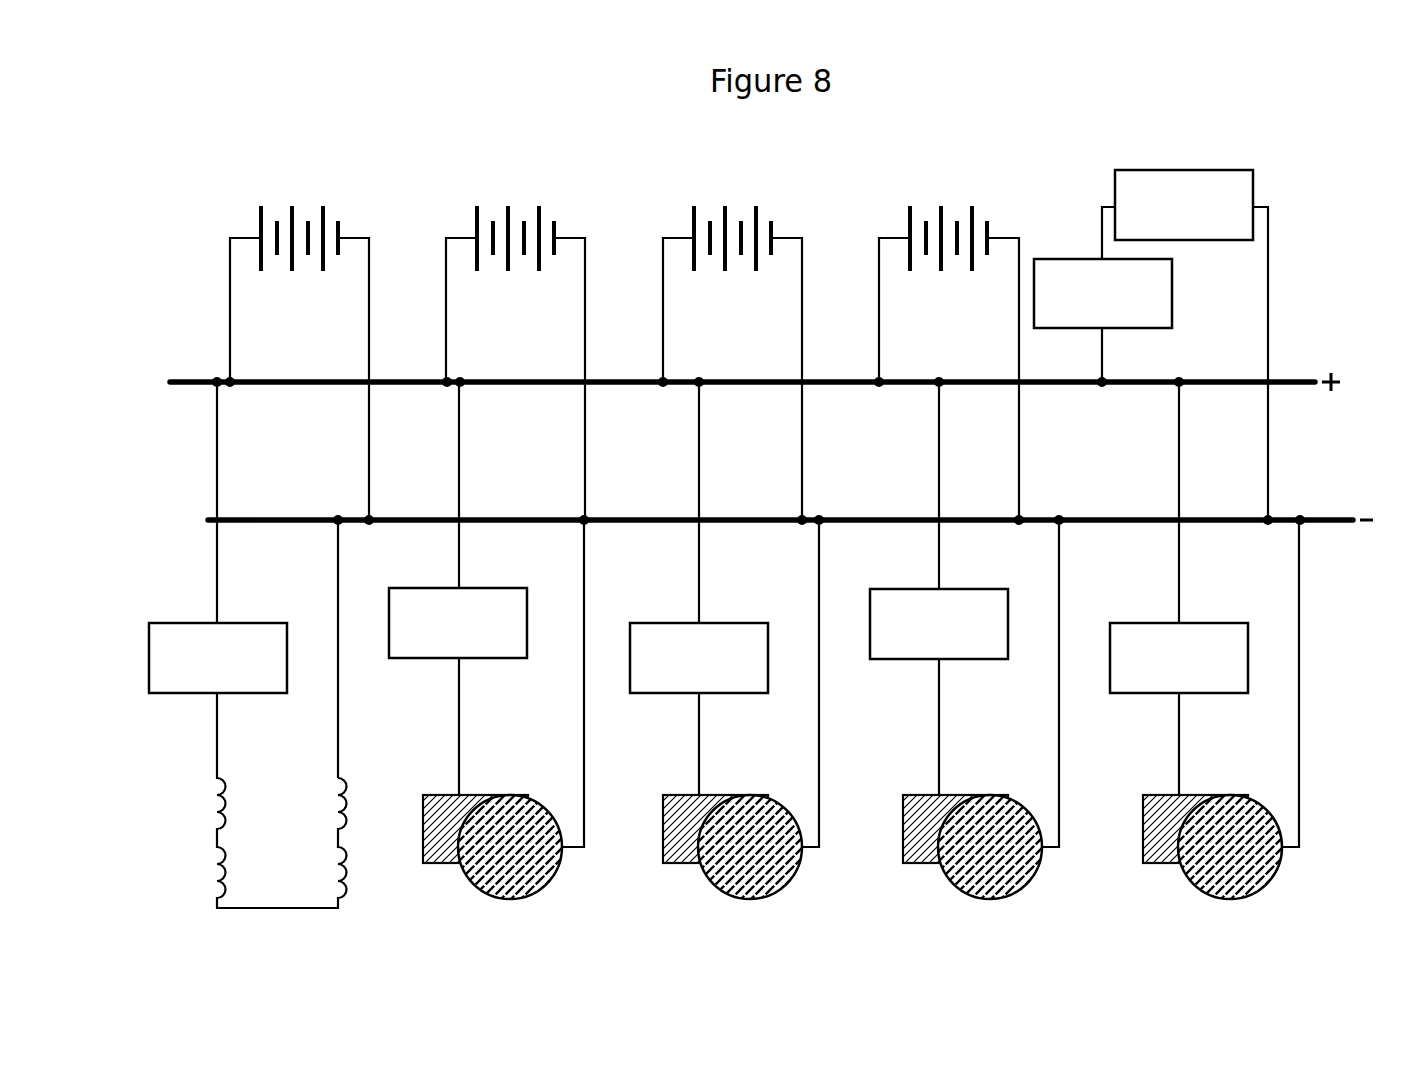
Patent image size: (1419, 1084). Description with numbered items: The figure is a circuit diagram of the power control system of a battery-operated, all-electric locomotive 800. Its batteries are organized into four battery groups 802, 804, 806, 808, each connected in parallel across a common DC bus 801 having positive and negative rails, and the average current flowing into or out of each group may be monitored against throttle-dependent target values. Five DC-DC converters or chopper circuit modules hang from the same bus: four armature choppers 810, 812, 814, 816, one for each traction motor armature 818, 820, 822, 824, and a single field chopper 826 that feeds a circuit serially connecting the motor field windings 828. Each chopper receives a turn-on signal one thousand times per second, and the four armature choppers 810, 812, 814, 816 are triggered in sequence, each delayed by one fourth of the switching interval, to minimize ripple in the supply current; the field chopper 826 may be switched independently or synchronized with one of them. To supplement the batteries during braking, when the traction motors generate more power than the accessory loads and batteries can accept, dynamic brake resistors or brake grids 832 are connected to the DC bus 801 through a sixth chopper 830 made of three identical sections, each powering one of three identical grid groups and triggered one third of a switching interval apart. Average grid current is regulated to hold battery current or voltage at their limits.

The locomotive 800 is at (214, 146).
The DC bus 801 is at (1310, 477).
The battery group 802 is at (348, 196).
The battery group 804 is at (563, 196).
The battery group 806 is at (780, 196).
The battery group 808 is at (996, 196).
The armature chopper 810 is at (480, 655).
The armature chopper 812 is at (721, 690).
The armature chopper 814 is at (961, 656).
The armature chopper 816 is at (1201, 690).
The traction motor armature 818 is at (492, 858).
The traction motor armature 820 is at (732, 858).
The traction motor armature 822 is at (972, 858).
The traction motor armature 824 is at (1212, 858).
The field chopper 826 is at (240, 690).
The motor field windings 828 is at (323, 868).
The grid chopper 830 is at (1128, 325).
The brake grids 832 is at (1209, 236).